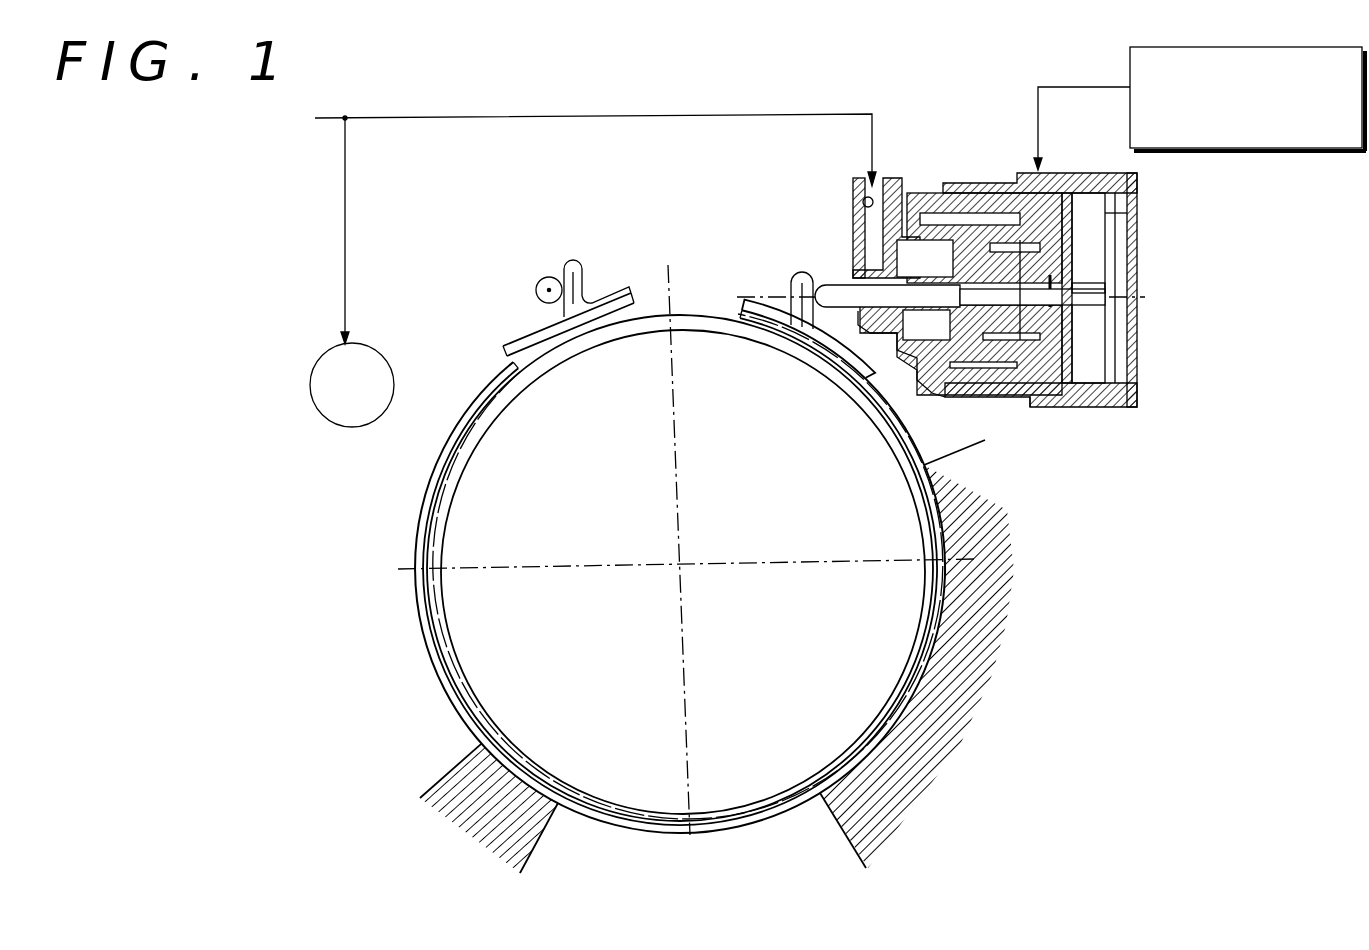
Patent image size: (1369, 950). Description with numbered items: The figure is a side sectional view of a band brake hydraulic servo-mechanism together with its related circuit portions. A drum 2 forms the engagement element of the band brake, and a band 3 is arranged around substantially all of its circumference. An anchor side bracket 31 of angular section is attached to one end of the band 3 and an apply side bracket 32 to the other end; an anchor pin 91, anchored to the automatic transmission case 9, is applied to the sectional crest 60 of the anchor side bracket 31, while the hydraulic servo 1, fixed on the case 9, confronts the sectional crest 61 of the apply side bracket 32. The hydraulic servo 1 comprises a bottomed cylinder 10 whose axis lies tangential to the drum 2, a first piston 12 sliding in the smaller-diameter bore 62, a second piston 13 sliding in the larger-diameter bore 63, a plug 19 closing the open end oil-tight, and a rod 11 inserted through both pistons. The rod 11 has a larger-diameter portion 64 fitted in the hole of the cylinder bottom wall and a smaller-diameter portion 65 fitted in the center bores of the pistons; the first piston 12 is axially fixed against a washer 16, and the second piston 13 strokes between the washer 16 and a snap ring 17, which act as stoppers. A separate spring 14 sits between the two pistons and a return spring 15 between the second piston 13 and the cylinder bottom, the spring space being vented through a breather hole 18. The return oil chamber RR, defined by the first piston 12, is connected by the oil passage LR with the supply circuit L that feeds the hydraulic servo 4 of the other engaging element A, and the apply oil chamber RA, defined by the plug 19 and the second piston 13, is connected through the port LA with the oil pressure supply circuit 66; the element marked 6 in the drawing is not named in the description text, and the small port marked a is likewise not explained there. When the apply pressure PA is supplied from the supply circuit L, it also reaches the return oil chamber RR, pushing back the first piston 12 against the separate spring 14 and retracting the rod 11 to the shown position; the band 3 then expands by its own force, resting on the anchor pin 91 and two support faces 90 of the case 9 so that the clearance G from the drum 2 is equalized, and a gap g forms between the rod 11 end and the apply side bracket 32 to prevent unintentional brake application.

The hydraulic servo 1 is at (1148, 330).
The drum 2 is at (692, 304).
The band 3 is at (464, 396).
The hydraulic servo of another engaging element 4 is at (310, 385).
The housing 6 is at (1112, 238).
The automatic transmission case 9 is at (460, 763).
The cylinder 10 is at (1060, 402).
The rod 11 is at (837, 270).
The first piston 12 is at (926, 325).
The second piston 13 is at (1096, 352).
The separate spring 14 is at (1012, 385).
The return spring 15 is at (985, 186).
The washer 16 is at (999, 263).
The snap ring 17 is at (1092, 269).
The breather hole 18 is at (940, 183).
The plug 19 is at (1118, 214).
The anchor side bracket 31 is at (580, 278).
The apply side bracket 32 is at (798, 268).
The sectional crest of the anchor side bracket 60 is at (562, 282).
The sectional crest of the apply side bracket 61 is at (815, 280).
The smaller-diameter bore 62 is at (905, 180).
The larger-diameter bore 63 is at (960, 183).
The larger-diameter portion of the rod 64 is at (876, 340).
The smaller-diameter portion of the rod 65 is at (998, 222).
The oil pressure supply circuit 66 is at (1005, 185).
The support faces 90 is at (934, 513).
The anchor pin 91 is at (533, 284).
The supply circuit L is at (326, 118).
The apply pressure PA is at (368, 168).
The clearance G is at (643, 322).
The gap g is at (818, 315).
The oil passage LR is at (853, 198).
The port LA is at (1082, 128).
The return oil chamber RR is at (925, 259).
The apply oil chamber RA is at (1040, 459).
The port a is at (1030, 122).